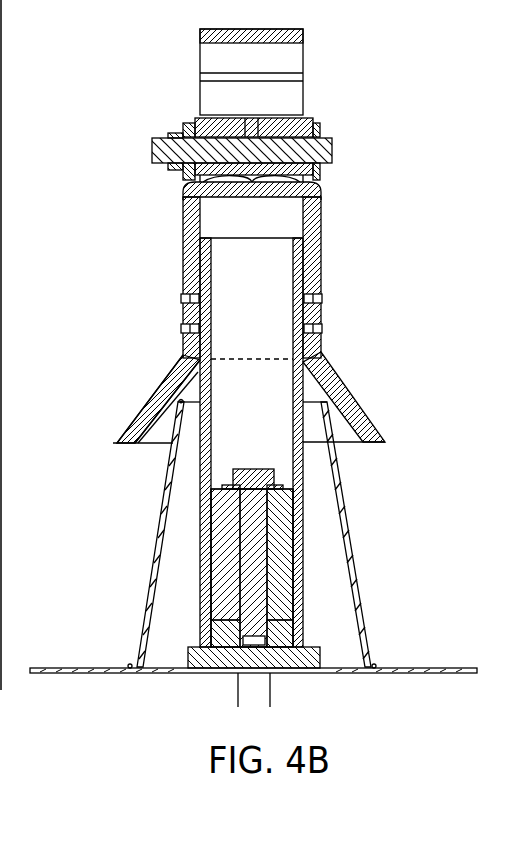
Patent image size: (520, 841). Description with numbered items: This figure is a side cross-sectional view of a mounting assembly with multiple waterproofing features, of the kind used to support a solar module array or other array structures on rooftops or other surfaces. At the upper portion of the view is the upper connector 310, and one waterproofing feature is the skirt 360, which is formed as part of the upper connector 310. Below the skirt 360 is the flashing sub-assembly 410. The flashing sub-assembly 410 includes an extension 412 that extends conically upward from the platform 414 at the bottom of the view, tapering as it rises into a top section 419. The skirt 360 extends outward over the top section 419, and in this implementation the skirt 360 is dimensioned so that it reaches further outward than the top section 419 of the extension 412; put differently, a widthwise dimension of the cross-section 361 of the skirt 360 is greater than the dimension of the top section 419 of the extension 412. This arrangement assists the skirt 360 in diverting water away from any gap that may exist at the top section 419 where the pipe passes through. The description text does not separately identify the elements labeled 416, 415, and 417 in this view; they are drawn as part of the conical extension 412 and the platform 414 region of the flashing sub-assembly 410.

The upper connector 310 is at (331, 208).
The skirt 360 is at (343, 380).
The cross-section 361 is at (118, 443).
The top section 419 is at (178, 404).
The cone legs 416 is at (346, 484).
The extension 412 is at (350, 528).
The flashing sub-assembly 410 is at (409, 408).
The base plate 415 is at (73, 667).
The platform 414 is at (425, 664).
The leg feet 417 is at (130, 674).